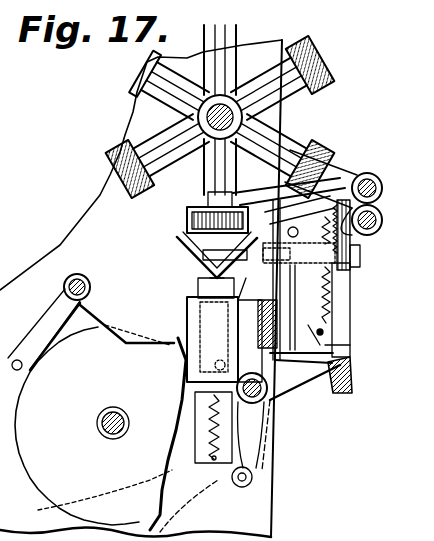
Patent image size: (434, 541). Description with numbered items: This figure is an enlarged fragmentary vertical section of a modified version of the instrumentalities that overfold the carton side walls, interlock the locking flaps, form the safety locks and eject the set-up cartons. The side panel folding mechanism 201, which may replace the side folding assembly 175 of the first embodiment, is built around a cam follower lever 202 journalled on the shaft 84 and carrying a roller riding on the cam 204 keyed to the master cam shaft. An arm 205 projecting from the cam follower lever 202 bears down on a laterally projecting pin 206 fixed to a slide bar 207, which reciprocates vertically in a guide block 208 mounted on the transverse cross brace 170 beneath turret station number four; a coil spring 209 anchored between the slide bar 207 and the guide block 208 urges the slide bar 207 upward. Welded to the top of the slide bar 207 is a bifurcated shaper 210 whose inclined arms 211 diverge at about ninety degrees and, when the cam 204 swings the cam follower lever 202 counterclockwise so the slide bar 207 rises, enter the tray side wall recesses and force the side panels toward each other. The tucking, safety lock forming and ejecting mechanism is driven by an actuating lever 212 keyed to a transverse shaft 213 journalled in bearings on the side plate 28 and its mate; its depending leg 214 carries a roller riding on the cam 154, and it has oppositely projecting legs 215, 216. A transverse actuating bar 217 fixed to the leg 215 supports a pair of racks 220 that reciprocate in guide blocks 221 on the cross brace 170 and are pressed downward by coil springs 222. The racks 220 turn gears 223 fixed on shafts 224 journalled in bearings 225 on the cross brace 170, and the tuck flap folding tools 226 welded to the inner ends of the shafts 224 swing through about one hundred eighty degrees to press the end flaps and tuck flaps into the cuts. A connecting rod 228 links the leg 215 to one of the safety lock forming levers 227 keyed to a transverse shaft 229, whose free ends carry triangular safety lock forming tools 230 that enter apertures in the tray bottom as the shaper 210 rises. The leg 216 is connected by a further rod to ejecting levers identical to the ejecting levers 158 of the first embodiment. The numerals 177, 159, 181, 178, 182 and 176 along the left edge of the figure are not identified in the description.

The ejecting levers 158 is at (336, 162).
The safety lock forming tools 230 is at (200, 209).
The bifurcated shaper 210 is at (200, 259).
The inclined arms 211 is at (235, 257).
The tuck flap folding tools 226 is at (212, 273).
The guide block 208 is at (205, 287).
The arm 205 is at (187, 309).
The laterally projecting pin 206 is at (216, 337).
The transverse cross brace 170 is at (248, 279).
The lever leg 216 is at (252, 374).
The transverse shaft 213 is at (272, 405).
The depending leg 214 is at (258, 441).
The actuating lever 212 is at (256, 461).
The slide bar 207 is at (205, 470).
The shaft 84 is at (84, 278).
The cam follower lever 202 is at (32, 323).
The side panel folding mechanism 201 is at (165, 233).
The coil spring 209 is at (180, 393).
The cam 204 is at (89, 490).
The cam 154 is at (211, 506).
The side plate 28 is at (273, 494).
The safety lock forming levers 227 is at (260, 199).
The shafts 224 is at (272, 241).
The racks 220 is at (368, 175).
The transverse shaft 229 is at (358, 251).
The gears 223 is at (345, 271).
The coil springs 222 is at (345, 301).
The guide blocks 221 is at (345, 341).
The bearings 225 is at (318, 276).
The connecting rod 228 is at (318, 331).
The actuating bar 217 is at (352, 383).
The lever leg 215 is at (322, 394).
The element 177 is at (11, 87).
The side folding assembly 175 is at (12, 109).
The element 159 is at (14, 132).
The element 181 is at (16, 154).
The element 178 is at (0, 178).
The element 182 is at (18, 198).
The element 176 is at (10, 218).